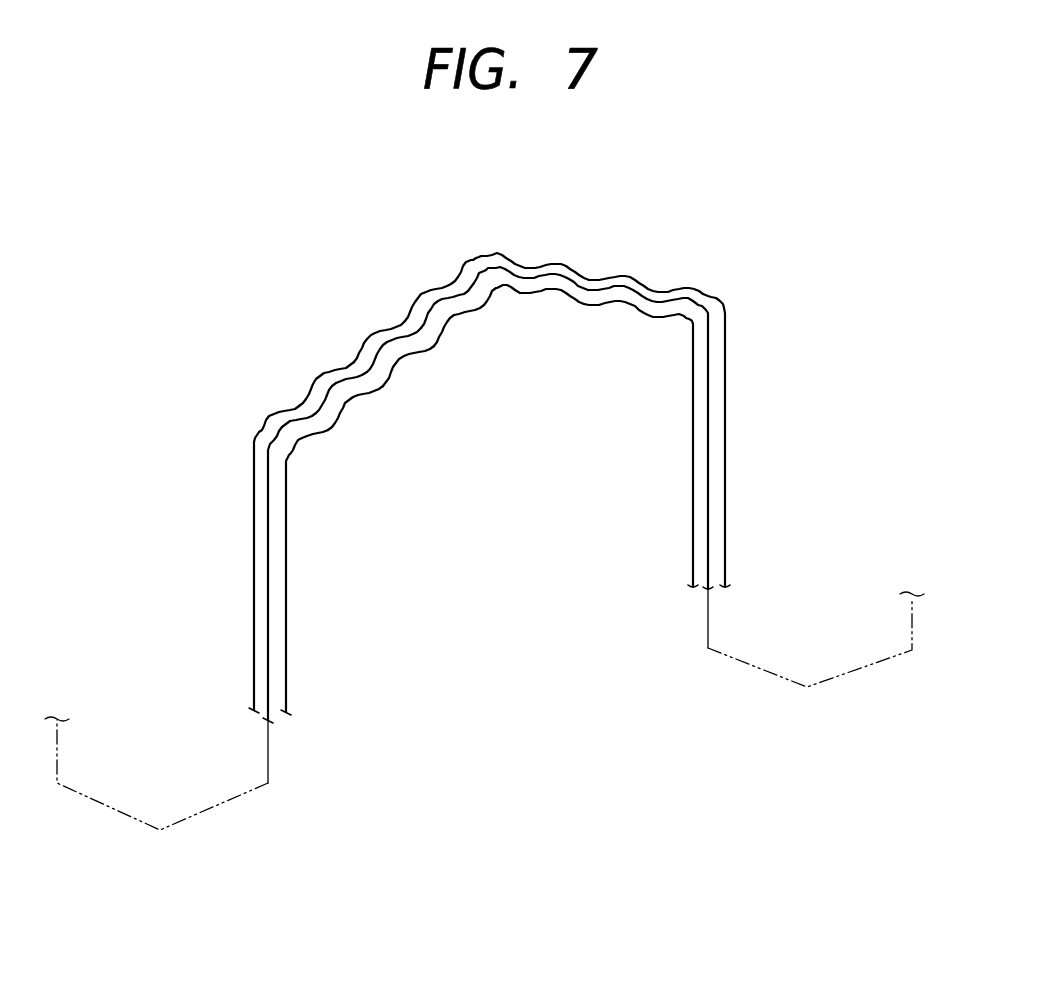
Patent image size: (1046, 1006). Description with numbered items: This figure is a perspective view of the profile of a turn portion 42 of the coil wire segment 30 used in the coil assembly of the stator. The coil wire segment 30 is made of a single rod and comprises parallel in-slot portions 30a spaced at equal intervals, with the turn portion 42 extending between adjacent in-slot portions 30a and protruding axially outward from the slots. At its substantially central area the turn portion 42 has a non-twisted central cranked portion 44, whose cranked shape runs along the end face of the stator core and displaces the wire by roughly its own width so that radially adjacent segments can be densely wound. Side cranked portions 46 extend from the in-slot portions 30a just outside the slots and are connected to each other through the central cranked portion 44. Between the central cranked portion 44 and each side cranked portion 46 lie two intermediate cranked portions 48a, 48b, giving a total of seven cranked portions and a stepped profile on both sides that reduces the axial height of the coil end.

The coil wire segment 30 is at (484, 501).
The in-slot portion 30a is at (712, 479).
The turn portion 42 is at (389, 361).
The central cranked portion 44 is at (476, 257).
The side cranked portion 46 is at (283, 420).
The intermediate cranked portion 48a is at (345, 372).
The intermediate cranked portion 48b is at (398, 332).